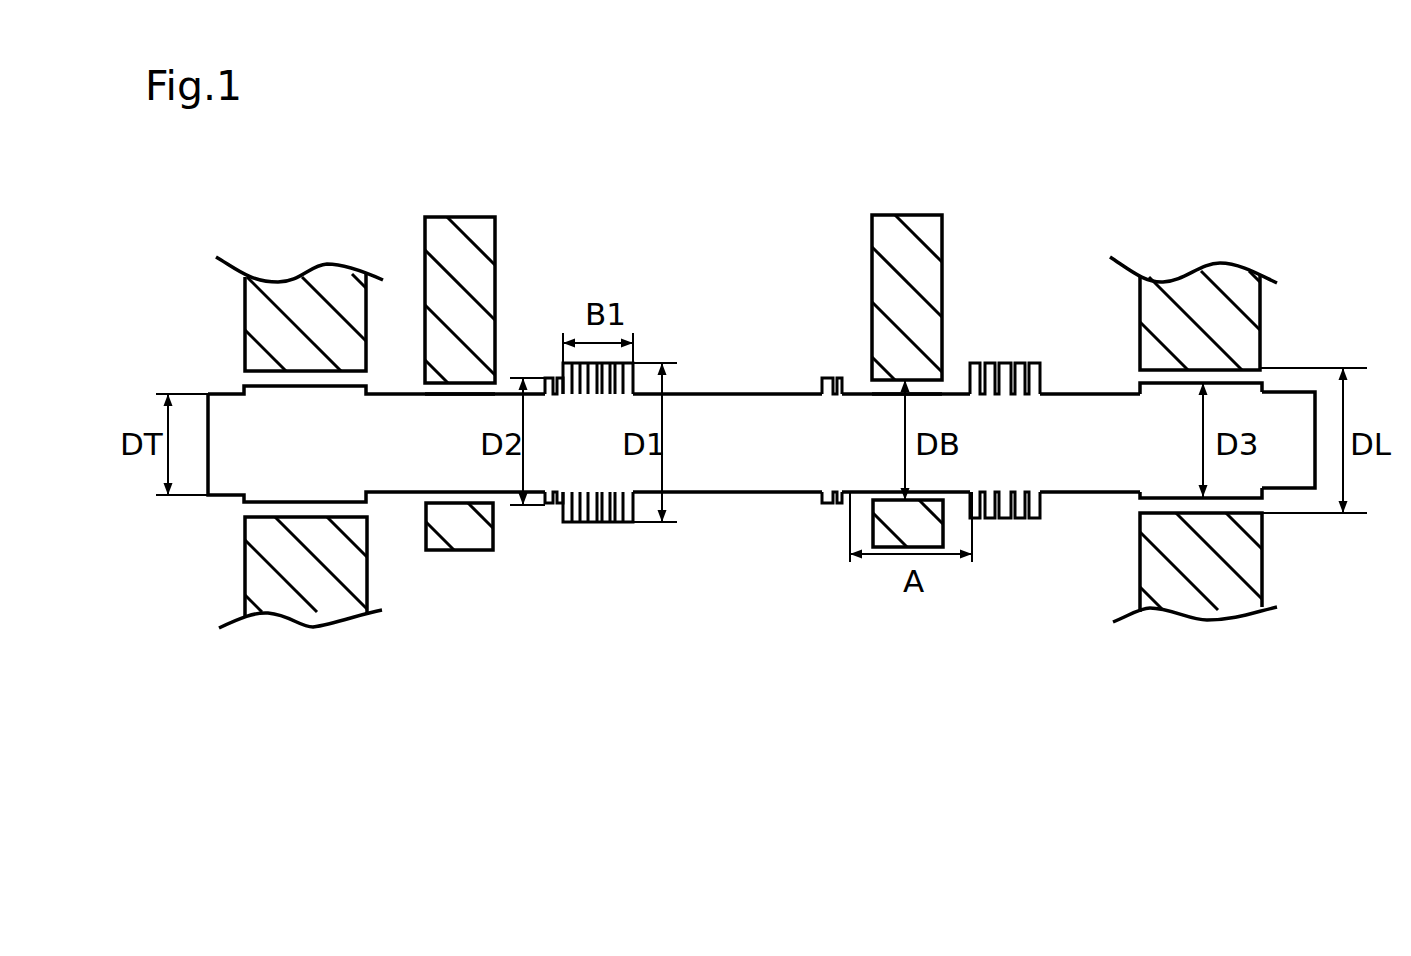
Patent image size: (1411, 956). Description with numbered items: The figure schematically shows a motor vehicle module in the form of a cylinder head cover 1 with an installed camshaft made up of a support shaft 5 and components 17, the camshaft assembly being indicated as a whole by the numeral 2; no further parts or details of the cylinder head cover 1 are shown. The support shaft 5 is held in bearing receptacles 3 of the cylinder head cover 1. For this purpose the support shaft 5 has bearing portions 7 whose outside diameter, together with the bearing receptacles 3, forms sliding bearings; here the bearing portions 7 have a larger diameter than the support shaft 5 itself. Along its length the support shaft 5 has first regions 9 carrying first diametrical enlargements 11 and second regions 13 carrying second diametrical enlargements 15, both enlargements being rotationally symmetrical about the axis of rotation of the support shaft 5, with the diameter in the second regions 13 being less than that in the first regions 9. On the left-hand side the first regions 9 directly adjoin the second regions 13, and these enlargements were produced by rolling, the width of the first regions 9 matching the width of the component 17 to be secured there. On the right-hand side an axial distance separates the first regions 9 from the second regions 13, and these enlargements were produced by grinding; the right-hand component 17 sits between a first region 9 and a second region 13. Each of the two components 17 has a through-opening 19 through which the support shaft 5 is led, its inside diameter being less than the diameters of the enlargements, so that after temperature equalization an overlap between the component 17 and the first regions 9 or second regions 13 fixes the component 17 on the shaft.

The cylinder head cover 1 is at (1230, 282).
The shaft 2 is at (627, 205).
The bearing receptacles 3 is at (1153, 373).
The support shaft 5 is at (243, 470).
The bearing portions 7 is at (1240, 500).
The first regions 9 is at (603, 523).
The first diametrical enlargements 11 is at (616, 360).
The second regions 13 is at (543, 377).
The second diametrical enlargements 15 is at (540, 505).
The components 17 is at (468, 258).
The through-opening 19 is at (447, 388).